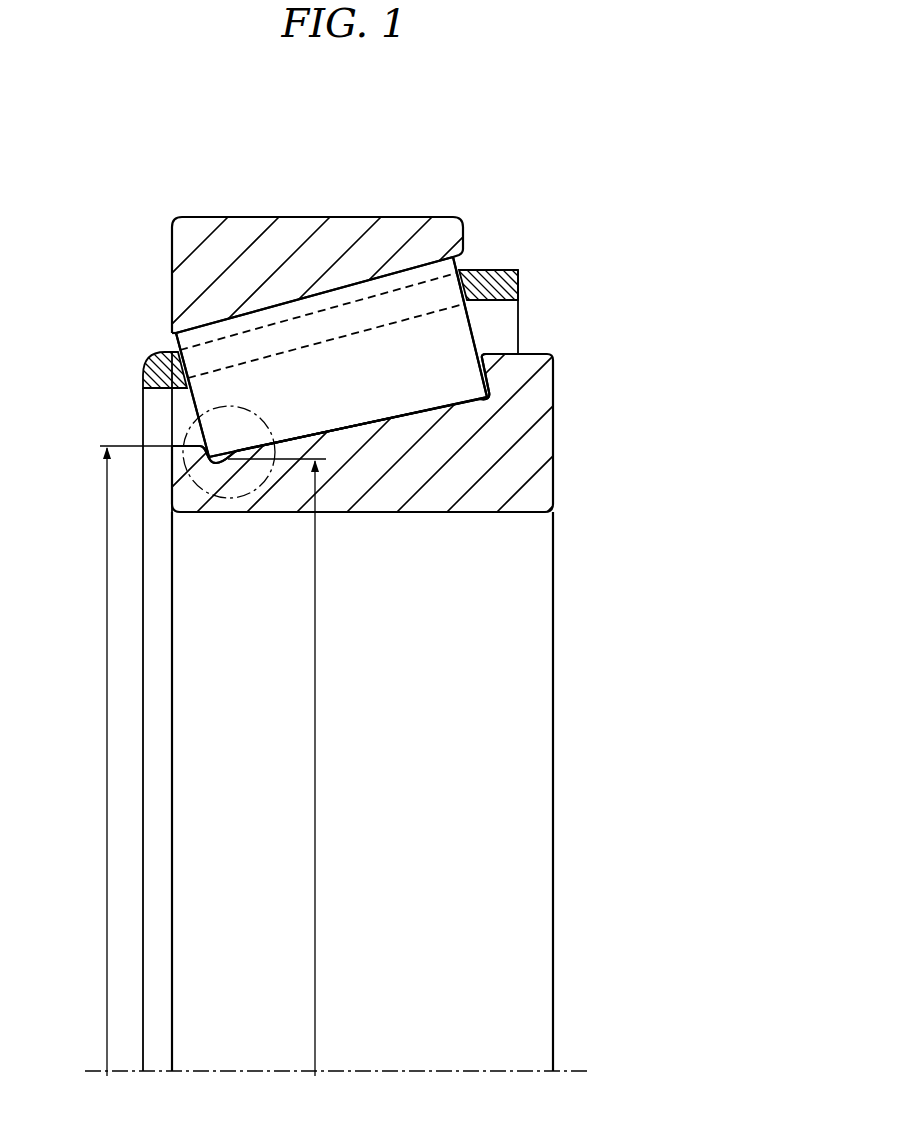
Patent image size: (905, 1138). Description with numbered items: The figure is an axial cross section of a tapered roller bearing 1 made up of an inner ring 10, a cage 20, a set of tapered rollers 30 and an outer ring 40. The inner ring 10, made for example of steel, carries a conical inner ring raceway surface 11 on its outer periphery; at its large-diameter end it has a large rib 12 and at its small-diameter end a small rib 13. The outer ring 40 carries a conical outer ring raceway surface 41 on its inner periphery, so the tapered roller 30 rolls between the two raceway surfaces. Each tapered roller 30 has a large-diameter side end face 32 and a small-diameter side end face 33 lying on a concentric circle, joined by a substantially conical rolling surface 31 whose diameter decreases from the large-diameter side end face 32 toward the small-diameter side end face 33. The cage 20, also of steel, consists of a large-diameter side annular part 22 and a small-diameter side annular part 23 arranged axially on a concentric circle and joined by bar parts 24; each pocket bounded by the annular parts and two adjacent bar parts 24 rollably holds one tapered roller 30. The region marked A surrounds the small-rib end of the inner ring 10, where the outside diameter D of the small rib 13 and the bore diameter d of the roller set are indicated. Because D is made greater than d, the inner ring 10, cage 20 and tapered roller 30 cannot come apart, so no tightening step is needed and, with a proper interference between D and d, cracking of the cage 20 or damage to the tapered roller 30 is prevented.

The tapered roller bearing 1 is at (579, 208).
The inner ring 10 is at (558, 479).
The inner ring raceway surface 11 is at (403, 412).
The large rib 12 is at (547, 397).
The small rib 13 is at (185, 456).
The cage 20 is at (498, 266).
The large-diameter side annular part 22 is at (520, 284).
The small-diameter side annular part 23 is at (150, 372).
The bar part 24 is at (227, 350).
The tapered roller 30 is at (484, 339).
The rolling surface 31 is at (332, 395).
The large-diameter side end face 32 is at (470, 313).
The small-diameter side end face 33 is at (190, 402).
The outer ring 40 is at (200, 211).
The outer ring raceway surface 41 is at (354, 284).
The detail region A is at (195, 420).
The outside diameter of the small rib D is at (107, 681).
The bore diameter of the roller d is at (315, 681).